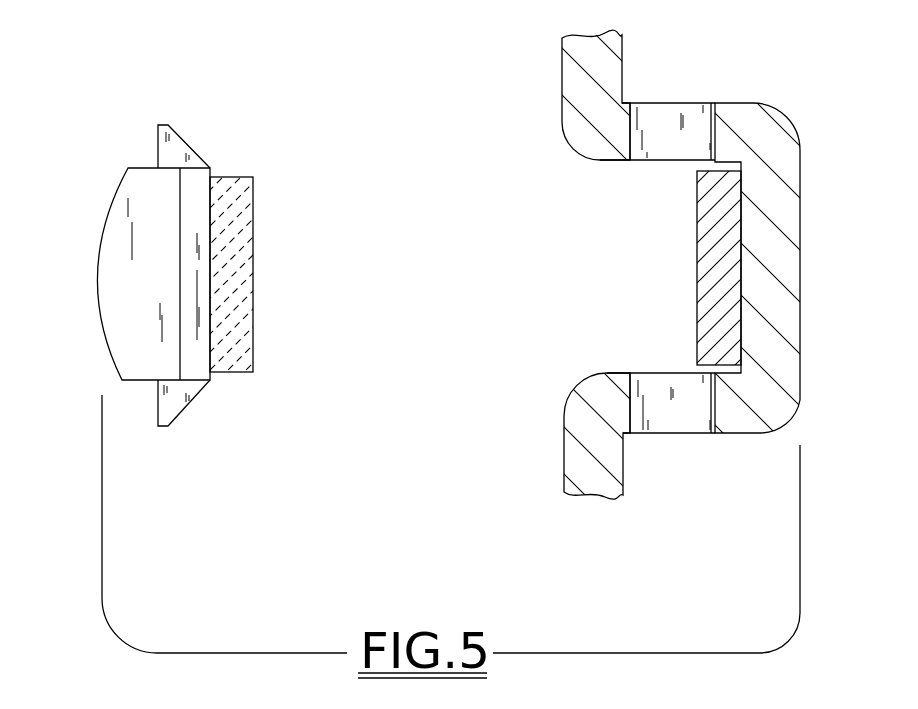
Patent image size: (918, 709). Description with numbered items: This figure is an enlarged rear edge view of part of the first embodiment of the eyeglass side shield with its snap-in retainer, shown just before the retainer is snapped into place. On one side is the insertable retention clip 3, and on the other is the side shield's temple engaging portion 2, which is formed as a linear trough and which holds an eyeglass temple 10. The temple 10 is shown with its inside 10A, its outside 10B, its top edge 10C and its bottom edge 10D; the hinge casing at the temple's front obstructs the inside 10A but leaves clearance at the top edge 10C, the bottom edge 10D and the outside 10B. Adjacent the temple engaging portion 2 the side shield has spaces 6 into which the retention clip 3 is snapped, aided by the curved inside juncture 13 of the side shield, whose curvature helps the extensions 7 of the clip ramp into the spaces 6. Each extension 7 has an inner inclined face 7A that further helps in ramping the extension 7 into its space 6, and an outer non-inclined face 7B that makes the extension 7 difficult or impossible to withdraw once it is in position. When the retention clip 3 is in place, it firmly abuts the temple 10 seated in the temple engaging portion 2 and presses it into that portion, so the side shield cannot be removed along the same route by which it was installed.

The temple engaging portion 2 is at (804, 181).
The retention clip 3 is at (104, 230).
The spaces 6 is at (677, 101).
The extensions 7 is at (168, 133).
The inner inclined faces 7A is at (189, 143).
The outer non-inclined faces 7B is at (156, 147).
The eyeglass temple 10 is at (235, 240).
The inside of the temple 10A is at (207, 301).
The outside of the temple 10B is at (256, 305).
The top edge of the temple 10C is at (232, 175).
The bottom edge of the temple 10D is at (239, 375).
The curved inside juncture 13 is at (577, 150).